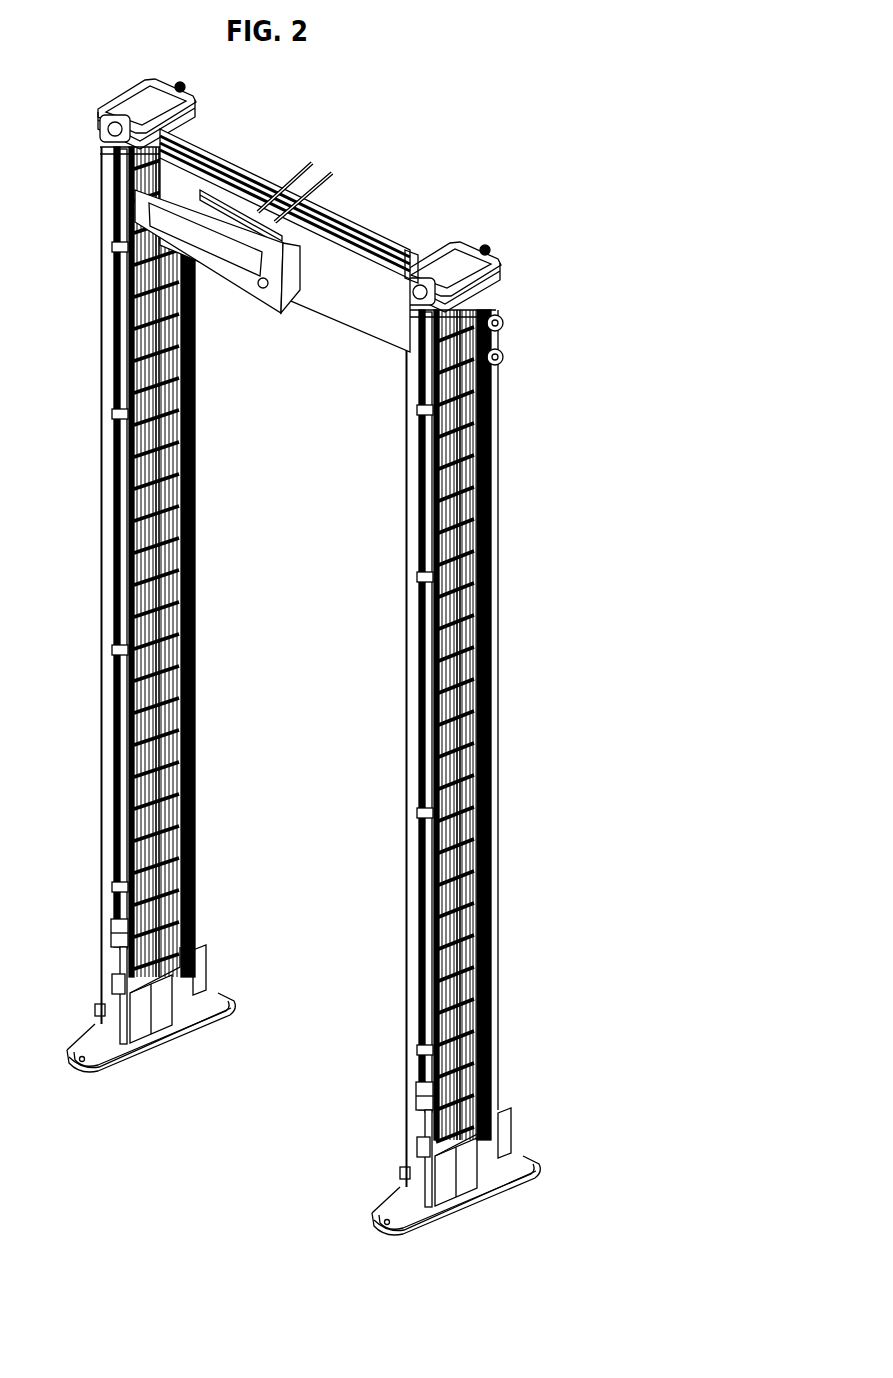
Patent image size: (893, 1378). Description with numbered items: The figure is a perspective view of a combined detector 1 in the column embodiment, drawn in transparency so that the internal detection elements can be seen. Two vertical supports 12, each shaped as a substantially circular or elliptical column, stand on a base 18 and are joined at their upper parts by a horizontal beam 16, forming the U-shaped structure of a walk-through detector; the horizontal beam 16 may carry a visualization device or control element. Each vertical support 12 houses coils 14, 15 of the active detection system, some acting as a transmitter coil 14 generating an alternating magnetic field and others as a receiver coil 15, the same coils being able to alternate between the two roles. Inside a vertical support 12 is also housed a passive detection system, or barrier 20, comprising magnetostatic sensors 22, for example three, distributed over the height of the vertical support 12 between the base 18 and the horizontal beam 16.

The combined detector 1 is at (537, 206).
The vertical support 12 is at (193, 478).
The transmitter coil 14 is at (183, 570).
The receiver coil 15 is at (474, 665).
The horizontal beam 16 is at (343, 218).
The base 18 is at (505, 1168).
The barrier 20 is at (105, 938).
The magnetostatic sensor 22 is at (117, 384).